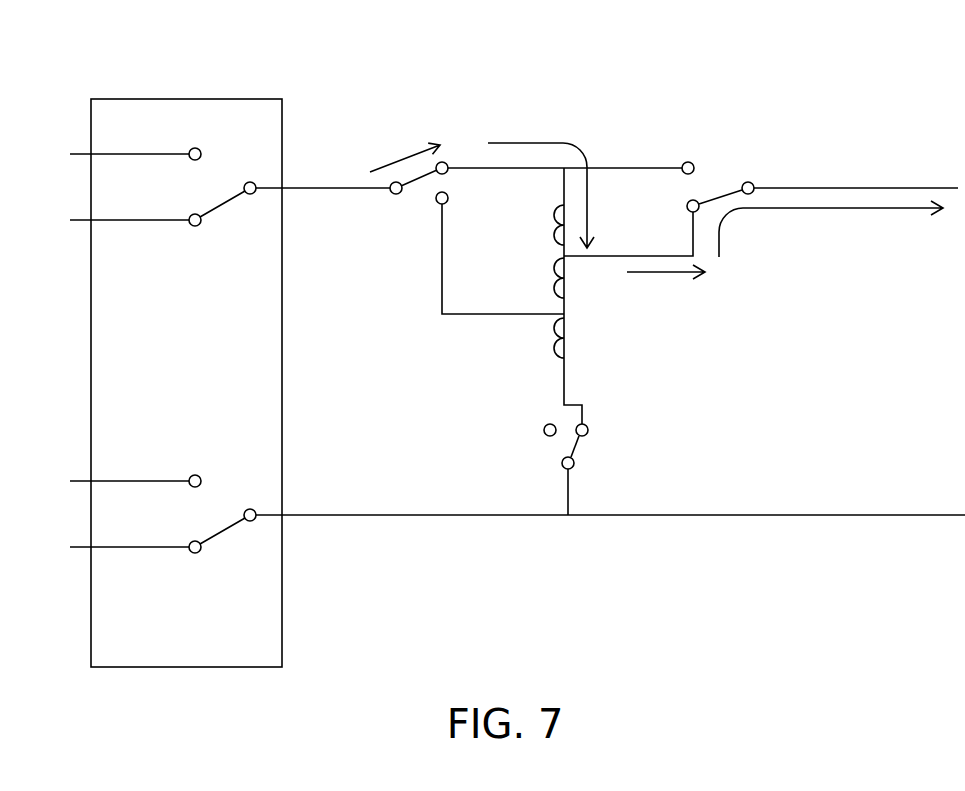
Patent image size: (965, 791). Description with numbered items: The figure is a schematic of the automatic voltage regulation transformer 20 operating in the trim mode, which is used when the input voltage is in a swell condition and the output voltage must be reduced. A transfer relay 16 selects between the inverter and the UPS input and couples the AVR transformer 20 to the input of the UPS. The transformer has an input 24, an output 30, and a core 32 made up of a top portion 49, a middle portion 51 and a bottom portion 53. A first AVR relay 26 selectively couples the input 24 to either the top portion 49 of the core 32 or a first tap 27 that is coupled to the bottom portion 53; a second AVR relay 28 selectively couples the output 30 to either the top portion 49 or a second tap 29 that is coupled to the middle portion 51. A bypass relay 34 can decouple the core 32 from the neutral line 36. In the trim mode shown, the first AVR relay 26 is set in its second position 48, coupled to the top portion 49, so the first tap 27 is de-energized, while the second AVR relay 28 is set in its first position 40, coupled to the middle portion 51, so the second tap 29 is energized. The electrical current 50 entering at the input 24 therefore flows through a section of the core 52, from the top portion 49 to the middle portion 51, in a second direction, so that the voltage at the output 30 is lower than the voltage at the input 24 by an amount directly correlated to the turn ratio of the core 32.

The transfer relay 16 is at (182, 107).
The AVR transformer 20 is at (528, 93).
The input 24 is at (318, 187).
The first AVR relay 26 is at (418, 179).
The second position 48 is at (442, 163).
The top portion 49 is at (562, 170).
The electrical current 50 is at (407, 157).
The section of the core 52 is at (557, 225).
The middle portion 51 is at (562, 255).
The bottom portion 53 is at (562, 315).
The core 32 is at (567, 283).
The first tap 27 is at (567, 322).
The second tap 29 is at (565, 257).
The first position 40 is at (687, 209).
The second AVR relay 28 is at (714, 198).
The output 30 is at (863, 188).
The bypass relay 34 is at (575, 443).
The neutral line 36 is at (385, 516).